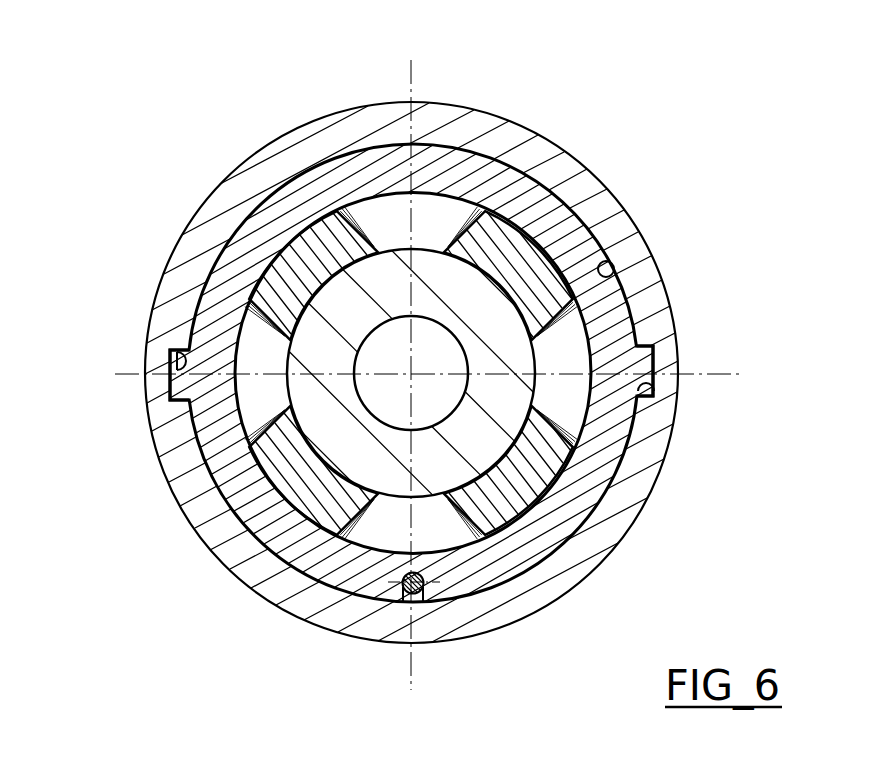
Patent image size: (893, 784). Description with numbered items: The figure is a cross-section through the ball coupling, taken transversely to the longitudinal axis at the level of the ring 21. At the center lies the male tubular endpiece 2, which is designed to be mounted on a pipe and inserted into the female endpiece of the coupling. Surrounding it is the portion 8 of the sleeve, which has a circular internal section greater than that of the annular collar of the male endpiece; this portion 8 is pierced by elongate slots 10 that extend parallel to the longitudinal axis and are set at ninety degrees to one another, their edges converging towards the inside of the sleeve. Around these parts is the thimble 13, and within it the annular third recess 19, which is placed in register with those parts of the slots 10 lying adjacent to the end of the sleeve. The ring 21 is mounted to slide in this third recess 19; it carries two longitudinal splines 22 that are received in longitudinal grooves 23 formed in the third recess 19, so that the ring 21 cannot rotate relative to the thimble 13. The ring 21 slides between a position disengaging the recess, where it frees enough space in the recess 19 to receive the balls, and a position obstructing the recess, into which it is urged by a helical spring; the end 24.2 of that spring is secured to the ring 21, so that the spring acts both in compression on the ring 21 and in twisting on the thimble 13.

The male tubular endpiece 2 is at (322, 436).
The portion of the sleeve 8 is at (283, 270).
The elongate slots 10 is at (387, 213).
The thimble 13 is at (612, 518).
The third recess 19 is at (640, 262).
The ring 21 is at (550, 215).
The longitudinal splines 22 is at (172, 392).
The longitudinal grooves 23 is at (185, 342).
The opposite end of the spring 24.2 is at (418, 600).